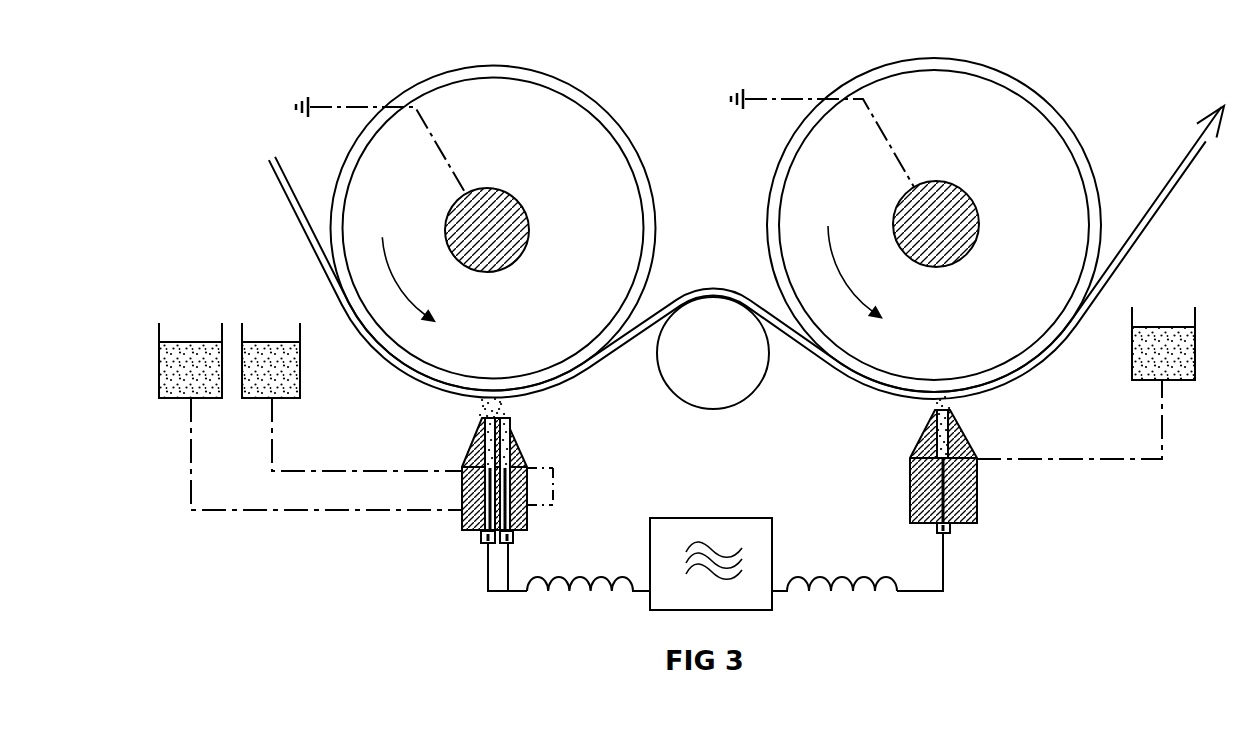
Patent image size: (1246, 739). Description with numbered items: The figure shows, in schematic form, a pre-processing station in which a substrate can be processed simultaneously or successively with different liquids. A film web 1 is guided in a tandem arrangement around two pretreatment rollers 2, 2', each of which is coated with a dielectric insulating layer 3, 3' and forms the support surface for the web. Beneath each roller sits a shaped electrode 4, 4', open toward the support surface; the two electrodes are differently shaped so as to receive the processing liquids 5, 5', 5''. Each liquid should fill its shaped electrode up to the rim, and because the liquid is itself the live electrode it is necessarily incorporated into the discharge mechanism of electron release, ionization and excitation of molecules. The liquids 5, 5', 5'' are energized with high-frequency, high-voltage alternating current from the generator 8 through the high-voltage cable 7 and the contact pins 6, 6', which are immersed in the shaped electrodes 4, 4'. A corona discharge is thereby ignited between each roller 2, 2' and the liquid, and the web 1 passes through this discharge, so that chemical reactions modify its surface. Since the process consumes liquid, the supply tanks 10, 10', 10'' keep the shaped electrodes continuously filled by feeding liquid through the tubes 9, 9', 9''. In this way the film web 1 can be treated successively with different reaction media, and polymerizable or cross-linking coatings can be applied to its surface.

The substrate web 1 is at (1160, 190).
The pretreatment roller 2 is at (910, 211).
The pretreatment roller 2' is at (470, 208).
The insulating layer 3 is at (934, 202).
The insulating layer 3' is at (493, 203).
The shaped electrode 4 is at (970, 492).
The shaped electrode 4' is at (482, 502).
The processing liquid 5 is at (916, 460).
The processing liquid 5' is at (532, 464).
The processing liquid 5'' is at (465, 464).
The contact pin 6 is at (956, 560).
The contact pin 6' is at (480, 564).
The high-voltage cable 7 is at (817, 572).
The generator 8 is at (712, 518).
The insulated tube 9 is at (1069, 444).
The tube 9' is at (326, 454).
The tube 9'' is at (367, 434).
The supply tank 10 is at (1138, 352).
The supply tank 10' is at (200, 346).
The supply tank 10'' is at (286, 346).